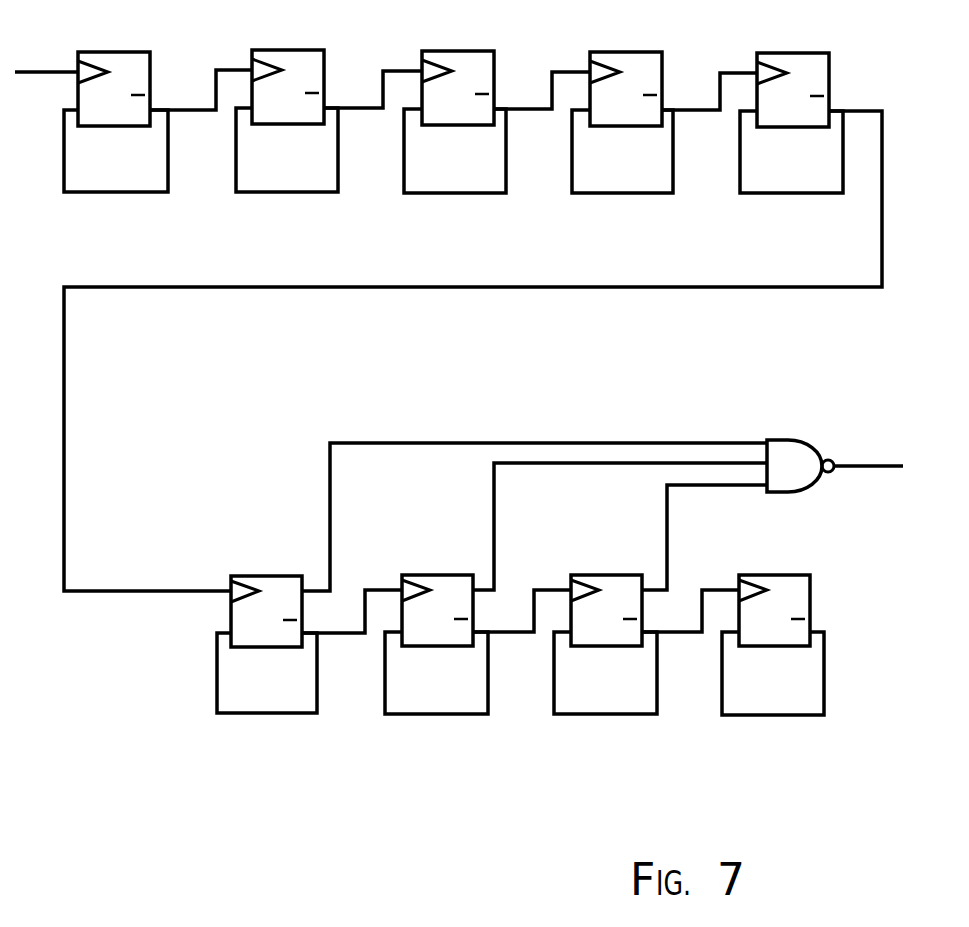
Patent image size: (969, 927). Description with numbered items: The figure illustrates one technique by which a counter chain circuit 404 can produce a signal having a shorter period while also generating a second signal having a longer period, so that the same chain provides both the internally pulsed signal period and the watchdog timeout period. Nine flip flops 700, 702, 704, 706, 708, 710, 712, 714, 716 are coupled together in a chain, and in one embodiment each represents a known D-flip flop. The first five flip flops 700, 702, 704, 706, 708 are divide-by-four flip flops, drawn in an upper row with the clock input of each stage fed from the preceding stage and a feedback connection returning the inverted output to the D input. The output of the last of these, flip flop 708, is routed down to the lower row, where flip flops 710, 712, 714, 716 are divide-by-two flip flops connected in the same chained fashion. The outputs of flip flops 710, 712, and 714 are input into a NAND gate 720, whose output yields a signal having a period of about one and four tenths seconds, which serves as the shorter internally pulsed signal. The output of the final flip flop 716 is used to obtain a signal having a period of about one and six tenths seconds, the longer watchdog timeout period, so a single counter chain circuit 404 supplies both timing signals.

The flip flop 700 is at (152, 60).
The flip flop 702 is at (324, 53).
The flip flop 704 is at (494, 58).
The flip flop 706 is at (662, 58).
The flip flop 708 is at (829, 59).
The flip flop 710 is at (253, 575).
The flip flop 712 is at (427, 575).
The flip flop 714 is at (602, 575).
The flip flop 716 is at (773, 575).
The NAND gate 720 is at (777, 440).
The counter chain circuit 404 is at (706, 386).